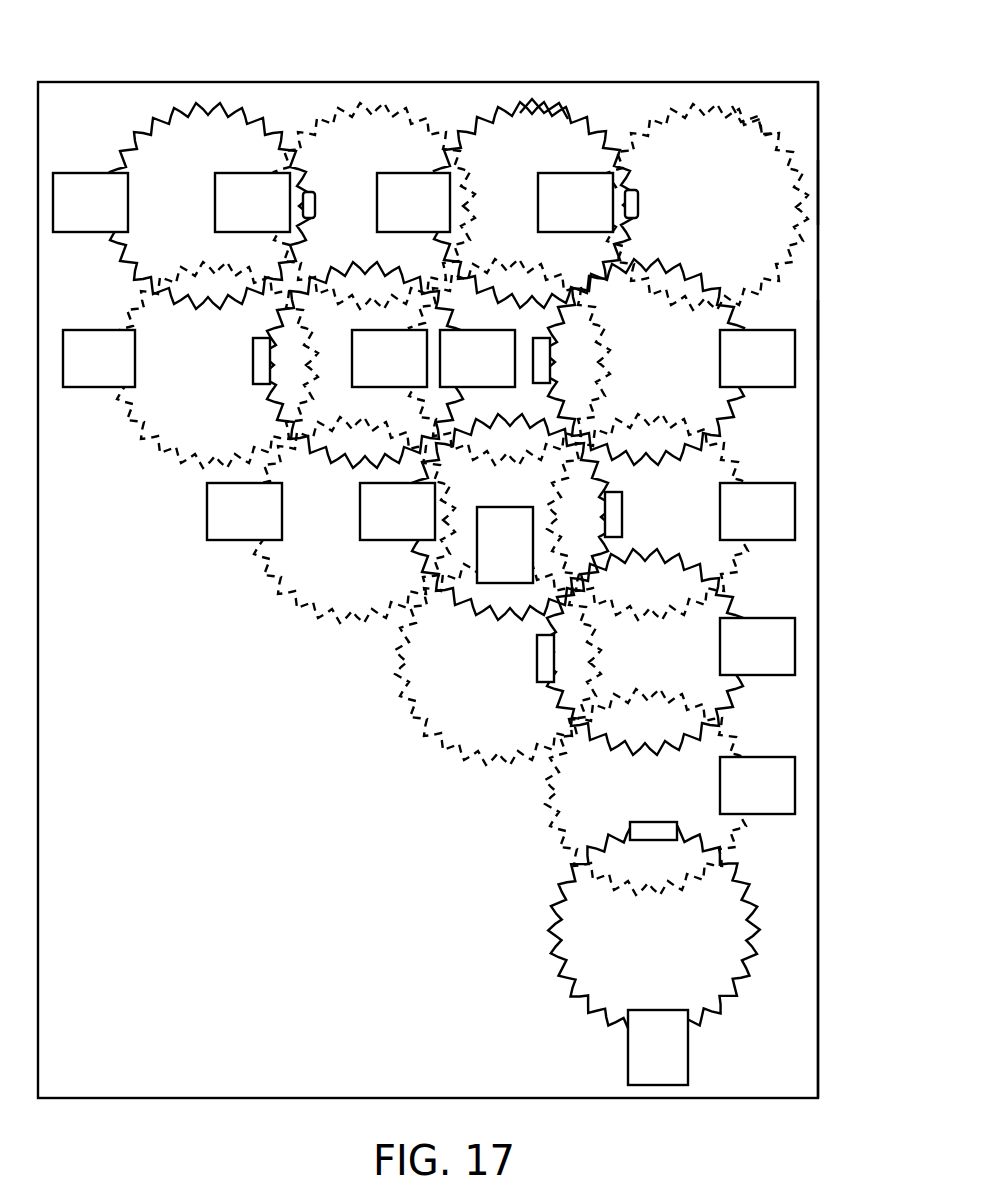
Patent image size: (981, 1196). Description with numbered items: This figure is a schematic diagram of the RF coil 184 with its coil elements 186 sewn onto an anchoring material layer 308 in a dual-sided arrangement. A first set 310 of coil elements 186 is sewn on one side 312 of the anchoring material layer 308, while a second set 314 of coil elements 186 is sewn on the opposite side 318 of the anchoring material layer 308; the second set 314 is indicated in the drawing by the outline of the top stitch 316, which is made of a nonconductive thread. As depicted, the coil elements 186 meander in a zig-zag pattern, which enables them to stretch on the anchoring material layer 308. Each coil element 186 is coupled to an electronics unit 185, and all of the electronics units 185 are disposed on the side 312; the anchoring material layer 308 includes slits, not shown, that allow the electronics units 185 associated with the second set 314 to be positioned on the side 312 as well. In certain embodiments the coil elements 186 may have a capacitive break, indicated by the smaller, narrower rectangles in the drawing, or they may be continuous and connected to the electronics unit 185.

The RF coil 184 is at (246, 66).
The electronics unit 185 is at (408, 173).
The first set of coil elements 310 is at (493, 92).
The coil element 186 is at (547, 105).
The second set of coil elements 314 is at (694, 88).
The top stitch 316 is at (756, 130).
The opposite side 318 is at (820, 193).
The anchoring material layer 308 is at (820, 245).
The side 312 is at (820, 327).